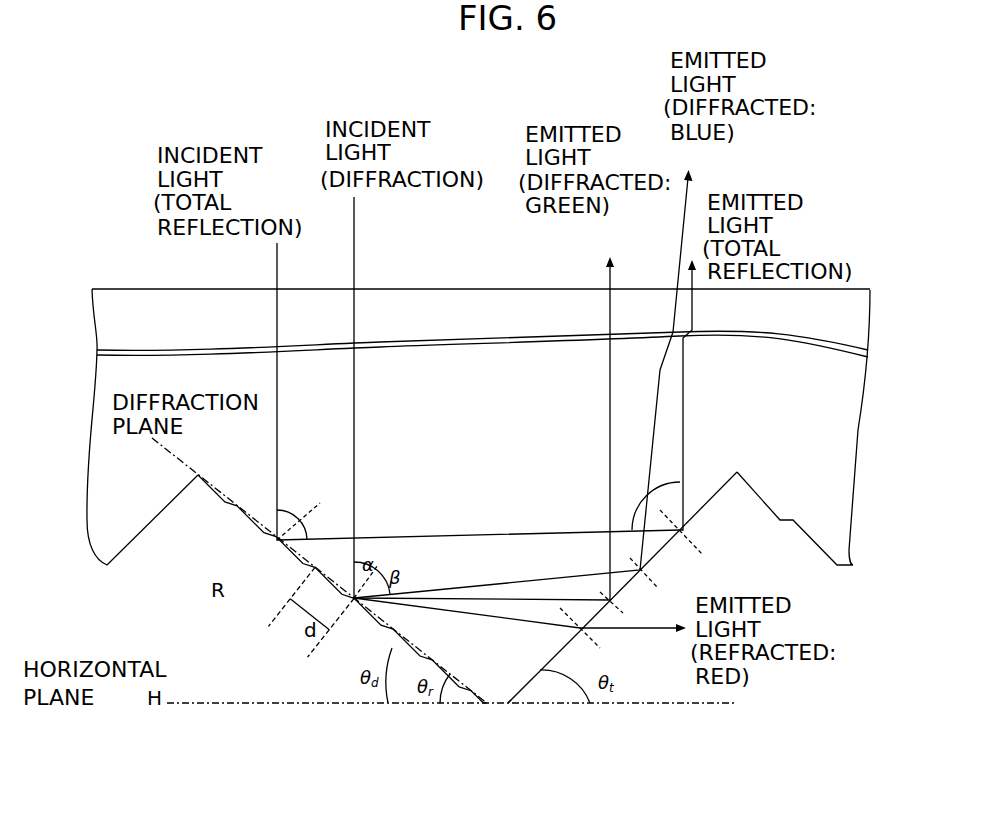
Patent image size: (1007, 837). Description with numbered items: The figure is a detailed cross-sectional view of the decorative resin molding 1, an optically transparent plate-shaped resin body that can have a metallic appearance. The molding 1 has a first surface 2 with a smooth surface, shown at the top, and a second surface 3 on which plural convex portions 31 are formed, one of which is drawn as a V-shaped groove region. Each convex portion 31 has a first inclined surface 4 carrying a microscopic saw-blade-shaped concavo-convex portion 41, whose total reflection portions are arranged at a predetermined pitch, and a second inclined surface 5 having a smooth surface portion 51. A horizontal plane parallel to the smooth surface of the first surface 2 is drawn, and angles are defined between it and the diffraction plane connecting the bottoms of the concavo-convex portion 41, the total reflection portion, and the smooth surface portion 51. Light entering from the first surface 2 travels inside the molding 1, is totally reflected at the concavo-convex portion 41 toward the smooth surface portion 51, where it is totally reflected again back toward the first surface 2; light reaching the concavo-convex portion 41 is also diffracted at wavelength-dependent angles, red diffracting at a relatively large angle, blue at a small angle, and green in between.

The molding 1 is at (467, 289).
The first surface 2 is at (393, 289).
The second surface 3 is at (713, 497).
The first inclined surface 4 is at (208, 493).
The second inclined surface 5 is at (547, 668).
The convex portion 31 is at (498, 690).
The concavo-convex portion 41 is at (462, 697).
The smooth surface portion 51 is at (527, 687).